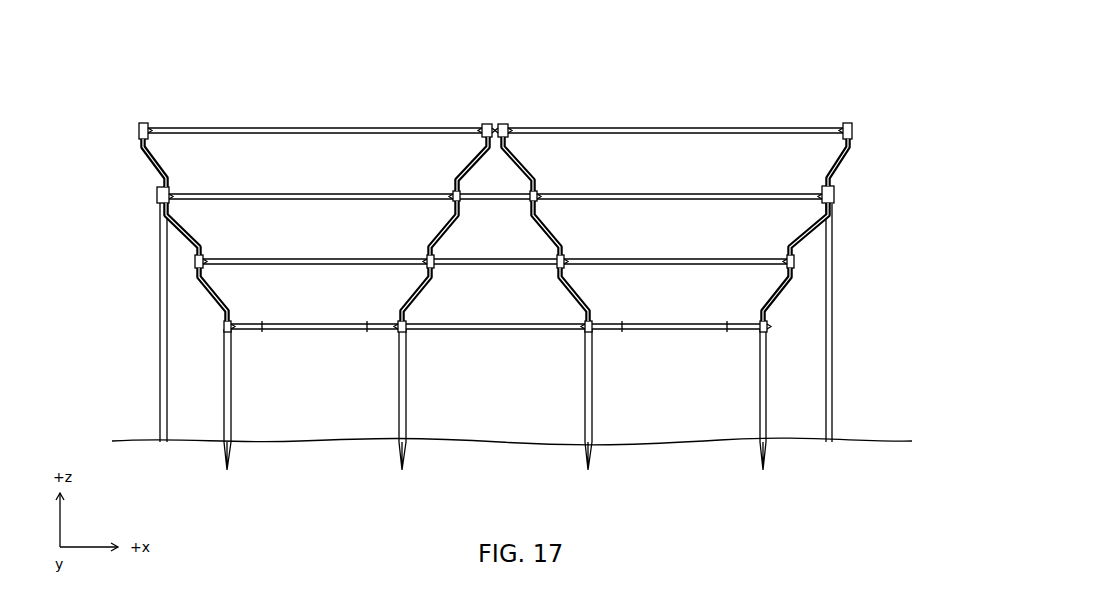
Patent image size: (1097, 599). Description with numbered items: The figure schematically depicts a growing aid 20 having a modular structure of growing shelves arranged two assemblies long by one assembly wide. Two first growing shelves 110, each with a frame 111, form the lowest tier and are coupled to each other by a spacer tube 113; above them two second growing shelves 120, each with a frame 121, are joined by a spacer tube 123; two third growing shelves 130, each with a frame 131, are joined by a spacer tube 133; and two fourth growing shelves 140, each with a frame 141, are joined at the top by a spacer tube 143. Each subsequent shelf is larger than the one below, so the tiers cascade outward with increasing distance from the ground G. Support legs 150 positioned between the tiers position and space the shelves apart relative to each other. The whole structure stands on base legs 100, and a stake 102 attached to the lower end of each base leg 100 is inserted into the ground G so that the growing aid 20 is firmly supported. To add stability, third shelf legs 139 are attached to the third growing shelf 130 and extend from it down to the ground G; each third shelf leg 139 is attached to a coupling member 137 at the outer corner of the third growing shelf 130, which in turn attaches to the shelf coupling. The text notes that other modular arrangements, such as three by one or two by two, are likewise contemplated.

The growing aid 20 is at (841, 62).
The ground G is at (893, 434).
The base legs 100 is at (525, 407).
The stake 102 is at (229, 462).
The first growing shelf 110 is at (474, 332).
The frame 111 is at (308, 327).
The spacer tube 113 is at (486, 329).
The second growing shelf 120 is at (443, 247).
The frame 121 is at (301, 259).
The spacer tube 123 is at (484, 265).
The third growing shelf 130 is at (486, 302).
The frame 131 is at (306, 195).
The spacer tube 133 is at (477, 199).
The coupling member 137 is at (151, 204).
The third shelf legs 139 is at (160, 360).
The fourth growing shelf 140 is at (488, 109).
The frame 141 is at (291, 126).
The spacer tube 143 is at (495, 126).
The support legs 150 is at (165, 167).